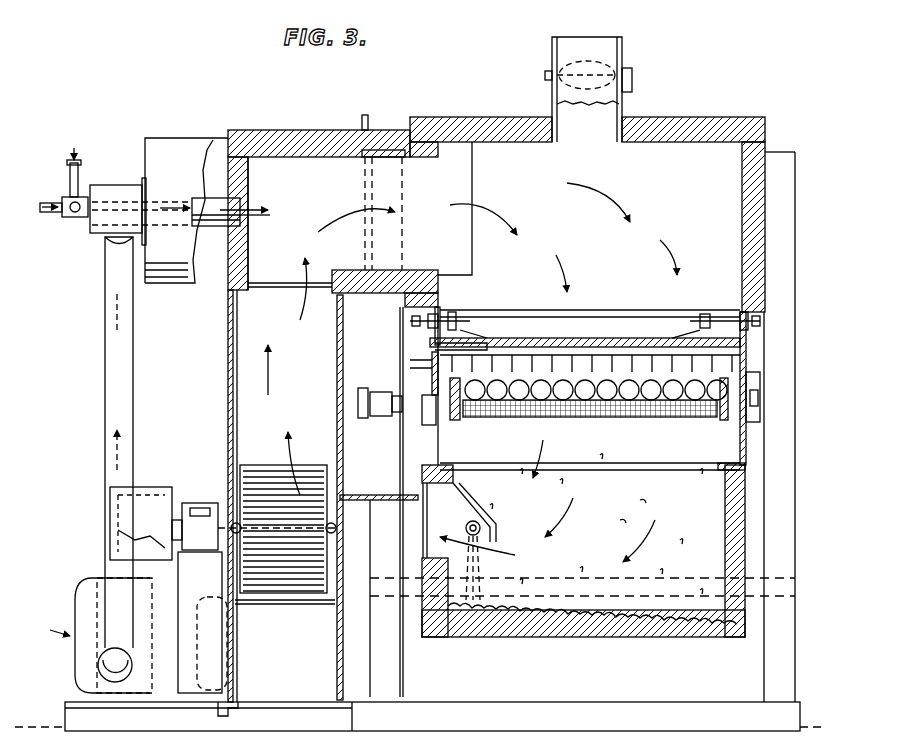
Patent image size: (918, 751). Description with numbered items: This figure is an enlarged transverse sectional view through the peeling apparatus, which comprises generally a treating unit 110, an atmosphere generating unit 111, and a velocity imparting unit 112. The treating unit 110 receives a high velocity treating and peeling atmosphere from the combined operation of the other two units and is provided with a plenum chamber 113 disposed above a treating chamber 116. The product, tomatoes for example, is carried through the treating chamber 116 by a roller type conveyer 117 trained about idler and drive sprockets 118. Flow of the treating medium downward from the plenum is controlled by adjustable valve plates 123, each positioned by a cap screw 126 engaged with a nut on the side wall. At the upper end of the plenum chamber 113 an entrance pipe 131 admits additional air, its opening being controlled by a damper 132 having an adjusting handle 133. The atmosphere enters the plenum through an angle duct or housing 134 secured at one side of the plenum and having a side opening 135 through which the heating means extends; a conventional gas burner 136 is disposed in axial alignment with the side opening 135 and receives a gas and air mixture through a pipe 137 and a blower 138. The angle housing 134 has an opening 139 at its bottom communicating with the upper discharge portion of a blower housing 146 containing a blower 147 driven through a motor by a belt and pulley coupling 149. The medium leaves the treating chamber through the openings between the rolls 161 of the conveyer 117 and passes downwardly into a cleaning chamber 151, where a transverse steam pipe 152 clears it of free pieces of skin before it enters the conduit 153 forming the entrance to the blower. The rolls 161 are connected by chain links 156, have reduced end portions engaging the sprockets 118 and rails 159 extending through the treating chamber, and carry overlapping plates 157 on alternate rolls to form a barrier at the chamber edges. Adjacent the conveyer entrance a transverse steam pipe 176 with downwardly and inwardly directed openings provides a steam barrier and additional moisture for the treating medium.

The treating unit 110 is at (741, 104).
The atmosphere generating unit 111 is at (185, 133).
The velocity imparting unit 112 is at (247, 452).
The plenum chamber 113 is at (728, 186).
The treating chamber 116 is at (583, 328).
The roller type conveyer 117 is at (612, 419).
The sprockets 118 is at (430, 426).
The adjustable valve plates 123 is at (636, 340).
The cap screw 126 is at (440, 322).
The entrance pipe 131 is at (622, 40).
The damper 132 is at (556, 56).
The adjusting handle 133 is at (633, 88).
The angle duct or housing 134 is at (316, 131).
The side opening 135 is at (270, 157).
The gas burner 136 is at (216, 228).
The pipe 137 is at (133, 393).
The blower 138 is at (92, 578).
The opening 139 is at (275, 292).
The blower housing 146 is at (229, 405).
The blower 147 is at (252, 494).
The belt and pulley coupling 149 is at (148, 488).
The cleaning chamber 151 is at (580, 568).
The transverse steam pipe 152 is at (469, 523).
The conduit 153 is at (377, 507).
The chain links 156 is at (415, 398).
The overlapping plates 157 is at (455, 390).
The rails 159 is at (415, 412).
The rolls 161 is at (490, 412).
The transverse steam pipe 176 is at (565, 352).